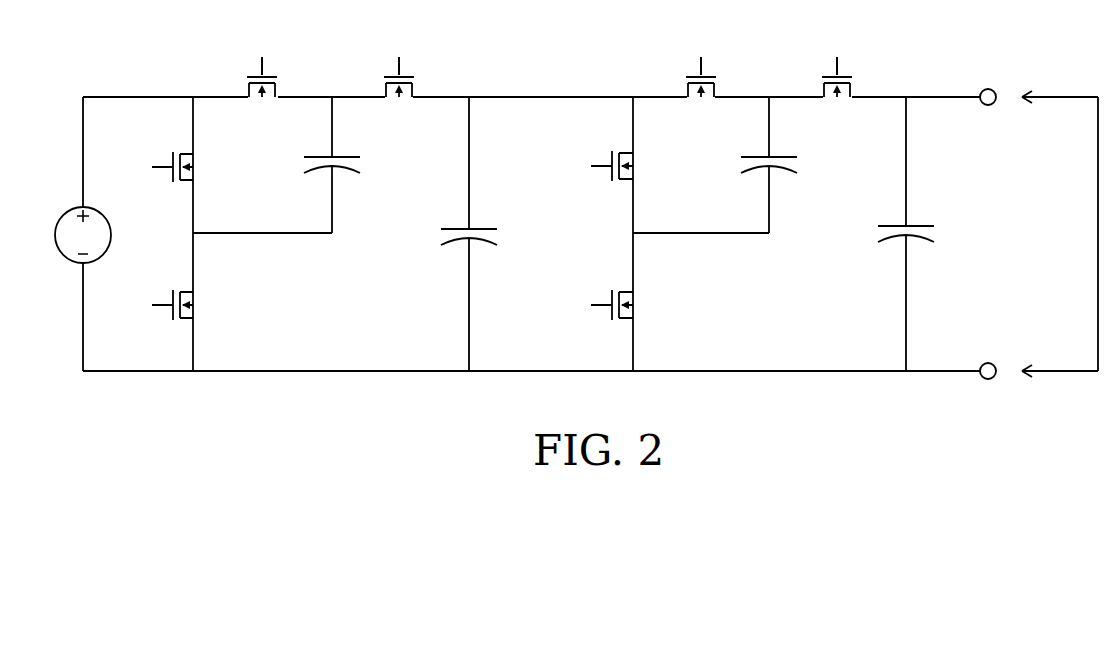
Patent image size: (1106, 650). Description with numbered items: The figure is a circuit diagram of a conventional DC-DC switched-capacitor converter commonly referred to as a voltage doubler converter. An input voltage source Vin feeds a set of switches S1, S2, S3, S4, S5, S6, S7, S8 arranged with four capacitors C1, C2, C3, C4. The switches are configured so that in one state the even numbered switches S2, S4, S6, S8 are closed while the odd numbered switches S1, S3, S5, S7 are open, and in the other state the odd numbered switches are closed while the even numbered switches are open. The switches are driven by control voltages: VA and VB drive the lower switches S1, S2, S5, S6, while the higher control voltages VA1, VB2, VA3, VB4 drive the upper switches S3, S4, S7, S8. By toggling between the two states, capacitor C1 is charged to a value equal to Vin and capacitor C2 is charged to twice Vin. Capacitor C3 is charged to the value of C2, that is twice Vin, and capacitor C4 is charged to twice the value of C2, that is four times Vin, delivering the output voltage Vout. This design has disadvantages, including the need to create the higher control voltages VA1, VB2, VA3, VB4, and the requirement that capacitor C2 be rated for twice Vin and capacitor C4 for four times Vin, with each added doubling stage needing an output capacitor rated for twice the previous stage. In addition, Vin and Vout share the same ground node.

The input voltage Vin is at (83, 235).
The switch S1 is at (193, 307).
The switch S2 is at (193, 169).
The switch S3 is at (262, 96).
The switch S4 is at (399, 96).
The switch S5 is at (633, 307).
The switch S6 is at (633, 168).
The switch S7 is at (701, 96).
The switch S8 is at (837, 96).
The capacitor C1 is at (353, 165).
The capacitor C2 is at (489, 234).
The capacitor C3 is at (789, 165).
The capacitor C4 is at (927, 234).
The control voltage VA is at (145, 309).
The control voltage VB is at (147, 171).
The control voltage VA1 is at (264, 44).
The control voltage VB2 is at (401, 44).
The control voltage VA3 is at (703, 44).
The control voltage VB4 is at (841, 44).
The output voltage Vout is at (1039, 234).